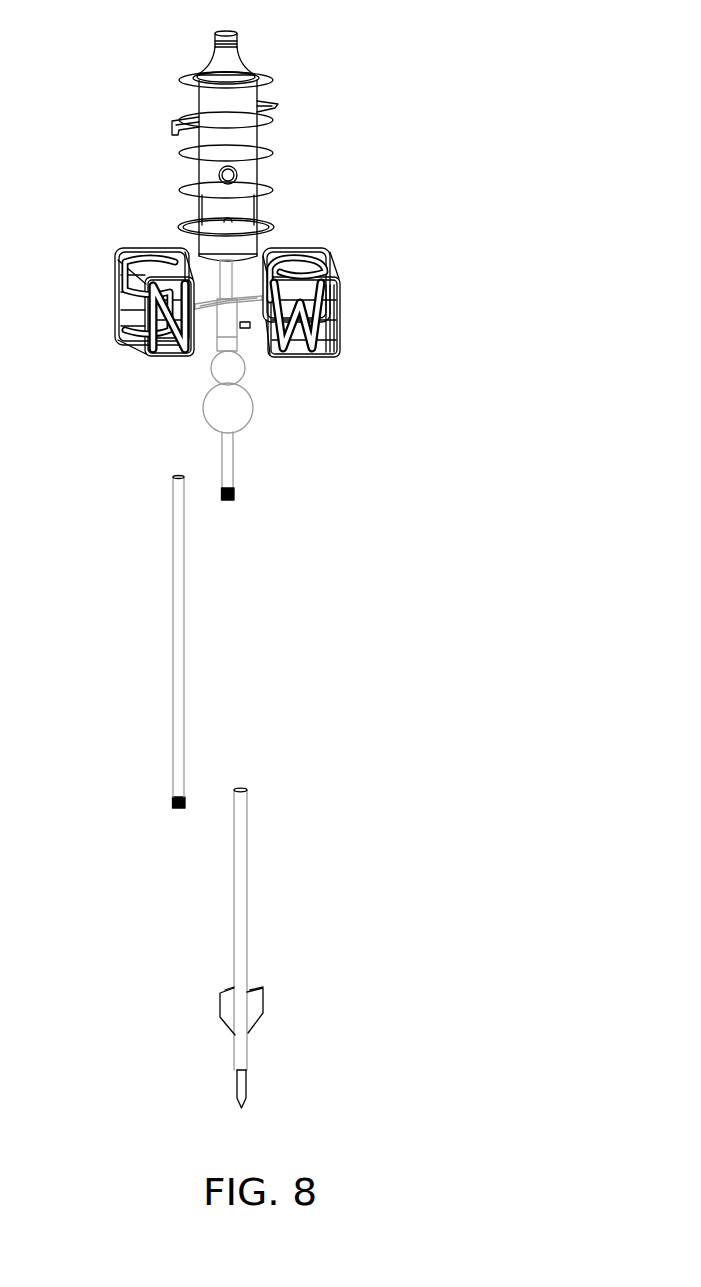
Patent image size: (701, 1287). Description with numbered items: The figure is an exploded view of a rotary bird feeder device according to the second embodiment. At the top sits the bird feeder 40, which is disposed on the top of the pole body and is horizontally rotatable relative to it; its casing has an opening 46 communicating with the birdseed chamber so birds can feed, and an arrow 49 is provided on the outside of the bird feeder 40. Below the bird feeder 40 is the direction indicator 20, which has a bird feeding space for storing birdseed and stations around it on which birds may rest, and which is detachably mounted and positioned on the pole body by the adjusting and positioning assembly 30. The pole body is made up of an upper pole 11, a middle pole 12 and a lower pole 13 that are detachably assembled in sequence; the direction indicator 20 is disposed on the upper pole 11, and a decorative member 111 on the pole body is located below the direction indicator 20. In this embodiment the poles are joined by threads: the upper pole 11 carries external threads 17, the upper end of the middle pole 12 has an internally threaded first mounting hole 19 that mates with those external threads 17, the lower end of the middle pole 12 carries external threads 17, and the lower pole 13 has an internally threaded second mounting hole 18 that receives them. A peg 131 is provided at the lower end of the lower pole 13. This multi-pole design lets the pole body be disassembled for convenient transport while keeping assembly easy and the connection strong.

The arrow 49 is at (258, 107).
The bird feeder 40 is at (277, 148).
The opening 46 is at (240, 175).
The adjusting and positioning assembly 30 is at (243, 307).
The direction indicator 20 is at (344, 303).
The decorative member 111 is at (238, 413).
The upper pole 11 is at (231, 463).
The external threads 17 is at (235, 495).
The first mounting hole 19 is at (173, 477).
The middle pole 12 is at (180, 690).
The second mounting hole 18 is at (245, 790).
The lower pole 13 is at (242, 908).
The peg 131 is at (240, 1093).